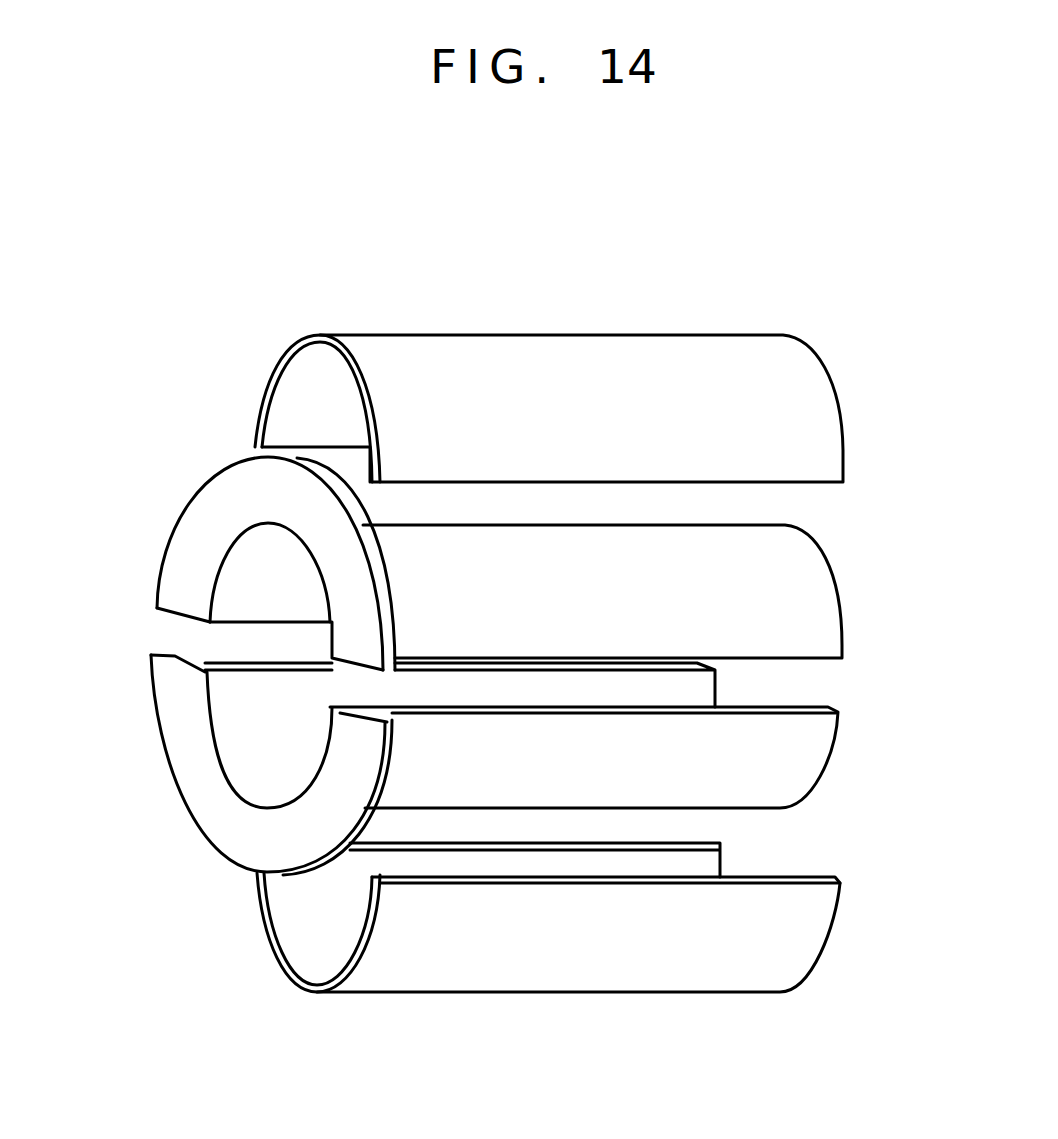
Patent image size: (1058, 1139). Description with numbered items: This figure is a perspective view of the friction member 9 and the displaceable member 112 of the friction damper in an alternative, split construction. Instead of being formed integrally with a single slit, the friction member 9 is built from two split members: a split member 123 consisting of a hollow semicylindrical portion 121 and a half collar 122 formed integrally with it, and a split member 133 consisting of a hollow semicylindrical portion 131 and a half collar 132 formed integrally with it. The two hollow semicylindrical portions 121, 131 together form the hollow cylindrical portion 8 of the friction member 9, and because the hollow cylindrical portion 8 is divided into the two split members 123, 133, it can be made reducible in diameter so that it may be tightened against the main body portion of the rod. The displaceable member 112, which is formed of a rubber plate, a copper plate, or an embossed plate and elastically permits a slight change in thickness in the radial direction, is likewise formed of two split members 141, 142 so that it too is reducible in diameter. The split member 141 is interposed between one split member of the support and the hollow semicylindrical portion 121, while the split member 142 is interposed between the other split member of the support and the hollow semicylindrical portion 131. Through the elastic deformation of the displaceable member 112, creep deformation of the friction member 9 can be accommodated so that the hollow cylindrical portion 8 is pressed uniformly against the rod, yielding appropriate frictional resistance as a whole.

The hollow cylindrical portion 8 is at (482, 766).
The friction member 9 is at (489, 533).
The displaceable member 112 is at (564, 365).
The hollow semicylindrical portion 121 is at (768, 576).
The half collar 122 is at (218, 562).
The split member 123 is at (176, 513).
The hollow semicylindrical portion 131 is at (788, 757).
The half collar 132 is at (210, 765).
The split member 133 is at (164, 767).
The split member 141 is at (576, 360).
The split member 142 is at (567, 970).